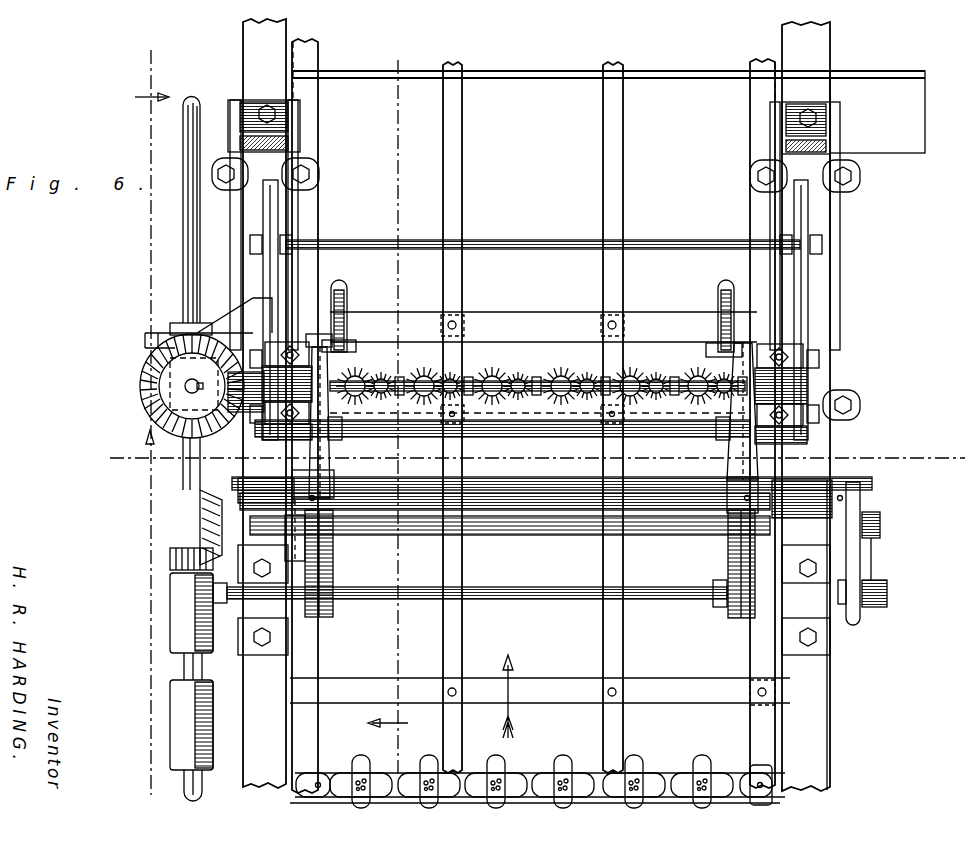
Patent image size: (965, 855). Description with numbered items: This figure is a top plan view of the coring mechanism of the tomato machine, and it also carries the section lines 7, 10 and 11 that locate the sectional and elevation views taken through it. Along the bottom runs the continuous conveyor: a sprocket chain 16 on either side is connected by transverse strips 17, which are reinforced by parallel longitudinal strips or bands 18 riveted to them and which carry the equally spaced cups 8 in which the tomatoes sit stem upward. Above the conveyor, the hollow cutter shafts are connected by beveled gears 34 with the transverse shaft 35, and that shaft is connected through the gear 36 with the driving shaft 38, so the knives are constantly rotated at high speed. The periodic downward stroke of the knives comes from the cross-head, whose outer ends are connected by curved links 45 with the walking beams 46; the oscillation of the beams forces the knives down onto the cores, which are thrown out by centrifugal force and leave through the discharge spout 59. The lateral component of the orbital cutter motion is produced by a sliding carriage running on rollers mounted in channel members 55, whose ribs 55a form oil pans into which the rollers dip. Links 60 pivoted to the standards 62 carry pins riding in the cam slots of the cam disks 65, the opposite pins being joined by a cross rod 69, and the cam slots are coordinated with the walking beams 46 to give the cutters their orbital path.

The section line 7- 7 is at (394, 408).
The cups 8 is at (515, 776).
The section line 10- 10 is at (514, 475).
The section line 11- 11 is at (145, 422).
The sprocket chain 16 is at (312, 771).
The transverse strips 17 is at (666, 777).
The longitudinal strips or bands 18 is at (462, 627).
The beveled gears 34 is at (578, 368).
The transverse shaft 35 is at (680, 378).
The gear 36 is at (150, 409).
The driving shaft 38 is at (183, 239).
The curved links 45 is at (340, 296).
The walking beams 46 is at (310, 464).
The channel members 55 is at (875, 211).
The ribs 55a is at (243, 131).
The discharge spout 59 is at (885, 154).
The links 60 is at (338, 470).
The standards 62 is at (275, 210).
The cam disks 65 is at (328, 617).
The cross rod 69 is at (660, 593).